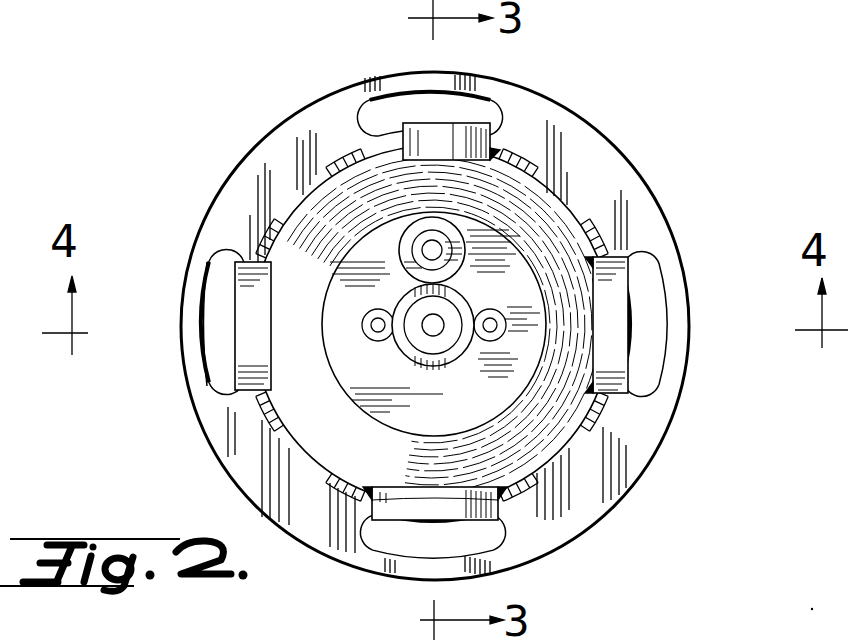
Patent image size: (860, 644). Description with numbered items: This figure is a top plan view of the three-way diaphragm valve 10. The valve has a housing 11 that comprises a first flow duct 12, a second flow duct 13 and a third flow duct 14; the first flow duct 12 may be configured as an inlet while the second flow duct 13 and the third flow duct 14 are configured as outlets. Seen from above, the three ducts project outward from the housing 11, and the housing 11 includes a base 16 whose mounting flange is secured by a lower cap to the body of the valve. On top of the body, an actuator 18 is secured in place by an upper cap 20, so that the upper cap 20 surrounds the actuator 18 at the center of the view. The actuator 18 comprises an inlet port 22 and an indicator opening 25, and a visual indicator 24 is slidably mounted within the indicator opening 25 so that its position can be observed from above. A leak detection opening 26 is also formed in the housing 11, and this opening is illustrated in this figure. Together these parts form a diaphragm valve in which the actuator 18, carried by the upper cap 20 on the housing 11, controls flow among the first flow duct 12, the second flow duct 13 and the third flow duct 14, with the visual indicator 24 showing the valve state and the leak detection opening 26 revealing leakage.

The three-way diaphragm valve 10 is at (708, 108).
The housing 11 is at (252, 283).
The first flow duct 12 is at (411, 521).
The second flow duct 13 is at (628, 317).
The third flow duct 14 is at (236, 305).
The base 16 is at (655, 442).
The actuator 18 is at (493, 255).
The upper cap 20 is at (473, 193).
The inlet port 22 is at (432, 250).
The visual indicator 24 is at (442, 320).
The indicator opening 25 is at (435, 327).
The leak detection opening 26 is at (433, 137).